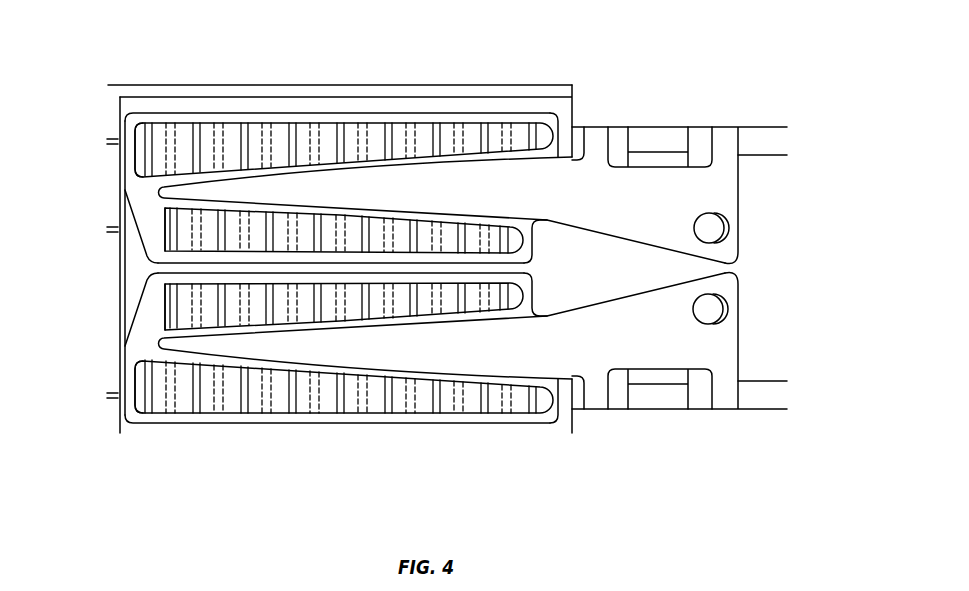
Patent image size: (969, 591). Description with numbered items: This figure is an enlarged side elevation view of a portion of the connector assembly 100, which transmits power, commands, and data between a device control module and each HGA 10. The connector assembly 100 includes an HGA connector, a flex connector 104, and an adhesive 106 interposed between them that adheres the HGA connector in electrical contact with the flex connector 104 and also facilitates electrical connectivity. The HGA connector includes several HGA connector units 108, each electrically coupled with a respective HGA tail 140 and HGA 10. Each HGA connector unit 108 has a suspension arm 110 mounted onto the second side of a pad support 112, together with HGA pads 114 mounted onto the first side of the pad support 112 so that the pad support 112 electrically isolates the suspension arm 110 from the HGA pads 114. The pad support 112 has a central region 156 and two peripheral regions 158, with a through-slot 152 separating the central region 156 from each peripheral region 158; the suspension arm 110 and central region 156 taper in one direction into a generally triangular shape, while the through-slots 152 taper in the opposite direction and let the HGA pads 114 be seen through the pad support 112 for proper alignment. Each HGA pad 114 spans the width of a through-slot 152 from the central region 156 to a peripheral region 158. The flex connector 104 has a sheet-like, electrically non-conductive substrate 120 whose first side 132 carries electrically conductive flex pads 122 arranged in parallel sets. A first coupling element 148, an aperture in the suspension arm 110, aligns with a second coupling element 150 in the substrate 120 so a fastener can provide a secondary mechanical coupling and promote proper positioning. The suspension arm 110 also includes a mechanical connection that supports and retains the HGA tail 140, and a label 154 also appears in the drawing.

The connector assembly 100 is at (653, 102).
The flex connector 104 is at (510, 83).
The adhesive 106 is at (170, 108).
The HGA connector unit 108 is at (106, 101).
The suspension arm 110 is at (517, 185).
The pad support 112 is at (130, 192).
The HGA pads 114 is at (247, 147).
The substrate 120 is at (394, 90).
The flex pads 122 is at (271, 200).
The first side 132 is at (552, 165).
The HGA tail 140 is at (758, 142).
The first coupling element 148 is at (723, 223).
The second coupling element 150 is at (723, 232).
The through-slot 152 is at (136, 139).
The mounting plates 154 is at (730, 210).
The central region 156 is at (165, 240).
The peripheral regions 158 is at (437, 118).
The HGA 10 is at (268, 519).